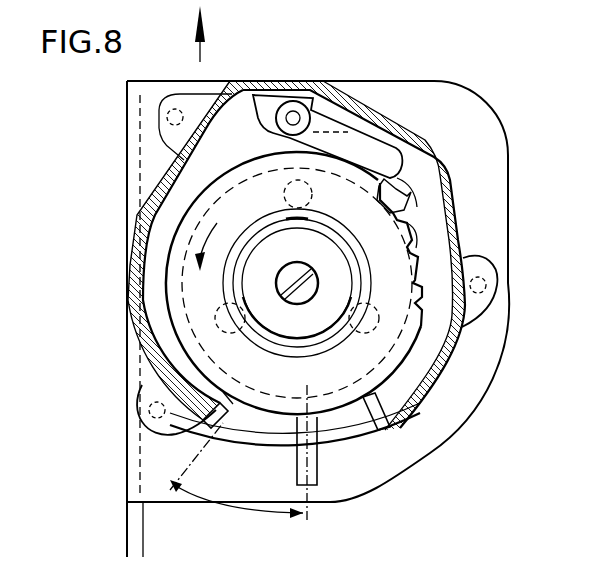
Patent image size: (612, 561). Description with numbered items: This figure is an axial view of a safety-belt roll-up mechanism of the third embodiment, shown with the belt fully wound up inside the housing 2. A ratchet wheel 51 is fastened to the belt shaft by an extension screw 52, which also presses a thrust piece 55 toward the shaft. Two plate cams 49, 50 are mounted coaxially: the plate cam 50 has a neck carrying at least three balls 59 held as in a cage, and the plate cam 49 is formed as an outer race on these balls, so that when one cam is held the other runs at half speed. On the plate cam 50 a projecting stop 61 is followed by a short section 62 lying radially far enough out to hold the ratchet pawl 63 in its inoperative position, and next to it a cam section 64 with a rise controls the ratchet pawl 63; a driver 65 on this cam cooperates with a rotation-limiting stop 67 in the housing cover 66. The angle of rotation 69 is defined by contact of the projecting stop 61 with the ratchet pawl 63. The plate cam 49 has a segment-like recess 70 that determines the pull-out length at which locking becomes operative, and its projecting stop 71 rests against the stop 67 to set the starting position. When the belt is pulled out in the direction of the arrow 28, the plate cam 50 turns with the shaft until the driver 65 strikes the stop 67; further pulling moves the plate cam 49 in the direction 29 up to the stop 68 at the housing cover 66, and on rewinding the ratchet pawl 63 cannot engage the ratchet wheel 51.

The housing 2 is at (493, 118).
The arrow 28 is at (199, 51).
The direction 29 is at (212, 237).
The plate cam 49 is at (170, 303).
The plate cam 50 is at (470, 402).
The ratchet wheel 51 is at (420, 255).
The extension screw 52 is at (291, 301).
The thrust piece 55 is at (332, 257).
The balls 59 is at (312, 188).
The projecting stop 61 is at (410, 198).
The short section 62 is at (381, 170).
The ratchet pawl 63 is at (308, 92).
The cam section 64 is at (366, 130).
The driver 65 is at (318, 480).
The housing cover 66 is at (127, 270).
The rotation-limiting stop 67 is at (173, 392).
The stop 68 is at (388, 408).
The angle of rotation 69 is at (258, 513).
The segment-like recess 70 is at (420, 237).
The projecting stop 71 is at (225, 434).